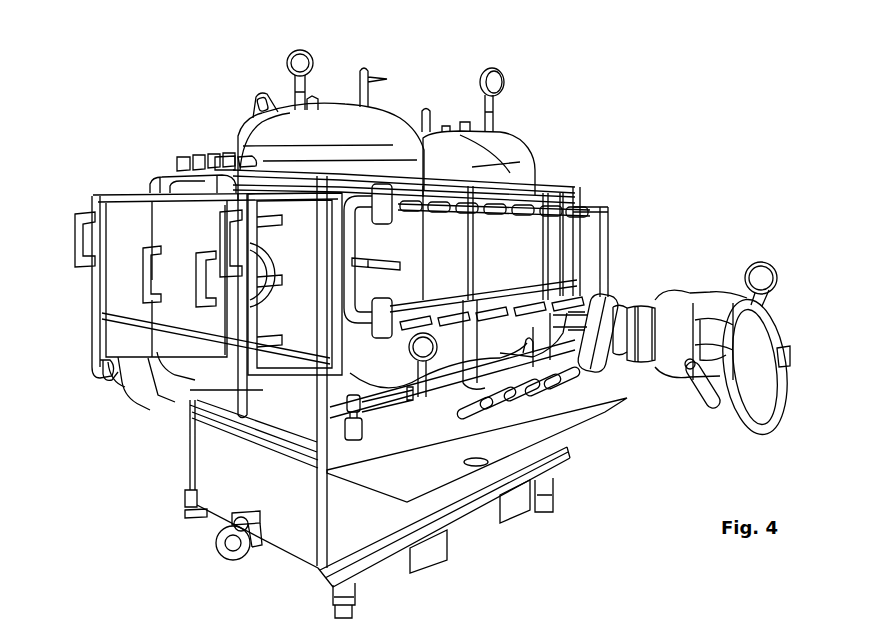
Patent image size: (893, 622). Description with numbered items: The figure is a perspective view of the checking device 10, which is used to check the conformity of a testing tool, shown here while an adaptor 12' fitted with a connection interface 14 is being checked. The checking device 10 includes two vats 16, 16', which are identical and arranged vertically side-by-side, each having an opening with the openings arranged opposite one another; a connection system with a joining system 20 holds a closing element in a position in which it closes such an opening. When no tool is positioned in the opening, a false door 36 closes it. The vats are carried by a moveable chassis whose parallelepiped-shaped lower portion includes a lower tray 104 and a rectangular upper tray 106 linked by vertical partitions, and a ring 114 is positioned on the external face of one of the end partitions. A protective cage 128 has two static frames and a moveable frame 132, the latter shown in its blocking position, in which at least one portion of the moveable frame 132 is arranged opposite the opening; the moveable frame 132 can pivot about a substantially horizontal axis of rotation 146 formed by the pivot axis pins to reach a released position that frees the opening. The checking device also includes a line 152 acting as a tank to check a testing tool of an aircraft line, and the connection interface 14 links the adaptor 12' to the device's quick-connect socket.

The checking device 10 is at (580, 89).
The adaptor 12' is at (723, 416).
The connection interface 14 is at (638, 290).
The vat 16 is at (331, 106).
The vat 16' is at (478, 115).
The joining system 20 is at (192, 135).
The false door 36 is at (152, 230).
The lower tray 104 is at (380, 575).
The upper tray 106 is at (367, 447).
The ring 114 is at (213, 527).
The protective cage 128 is at (90, 345).
The moveable frame 132 is at (118, 370).
The axis of rotation 146 is at (140, 370).
The line 152 is at (530, 197).